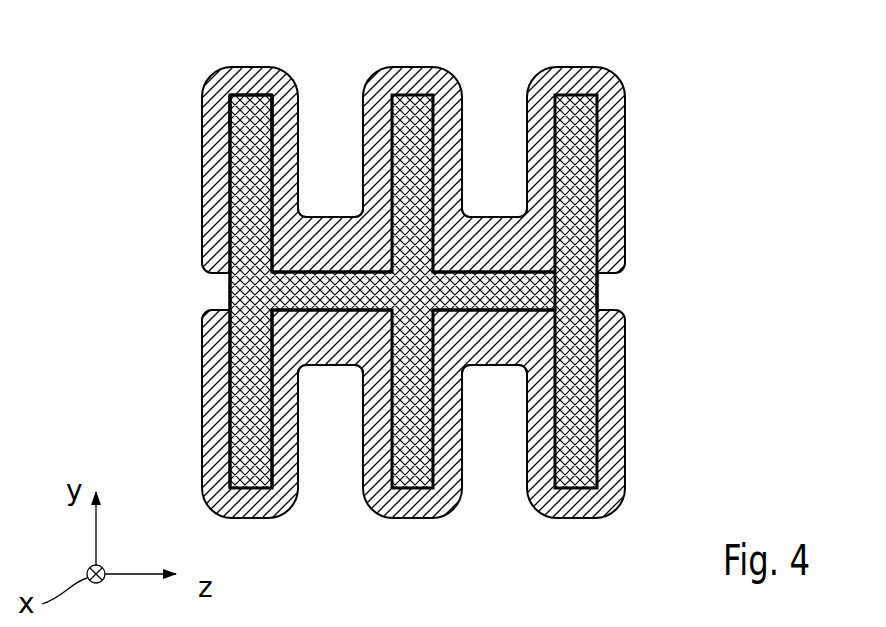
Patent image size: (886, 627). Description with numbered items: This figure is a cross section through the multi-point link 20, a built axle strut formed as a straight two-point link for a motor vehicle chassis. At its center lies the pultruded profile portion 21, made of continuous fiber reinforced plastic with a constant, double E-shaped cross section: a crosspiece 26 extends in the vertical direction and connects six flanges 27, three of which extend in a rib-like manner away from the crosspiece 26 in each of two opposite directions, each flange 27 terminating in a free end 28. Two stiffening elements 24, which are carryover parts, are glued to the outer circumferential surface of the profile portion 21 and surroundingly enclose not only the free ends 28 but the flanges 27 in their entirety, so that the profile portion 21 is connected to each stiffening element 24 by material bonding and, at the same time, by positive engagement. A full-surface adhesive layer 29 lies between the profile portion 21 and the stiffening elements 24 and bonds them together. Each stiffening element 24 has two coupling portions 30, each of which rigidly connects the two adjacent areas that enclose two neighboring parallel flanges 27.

The multi-point link 20 is at (662, 130).
The profile portion 21 is at (608, 225).
The stiffening element 24 is at (632, 177).
The crosspiece 26 is at (290, 289).
The flange 27 is at (250, 187).
The free end 28 is at (250, 112).
The adhesive layer 29 is at (600, 340).
The coupling portion 30 is at (327, 247).